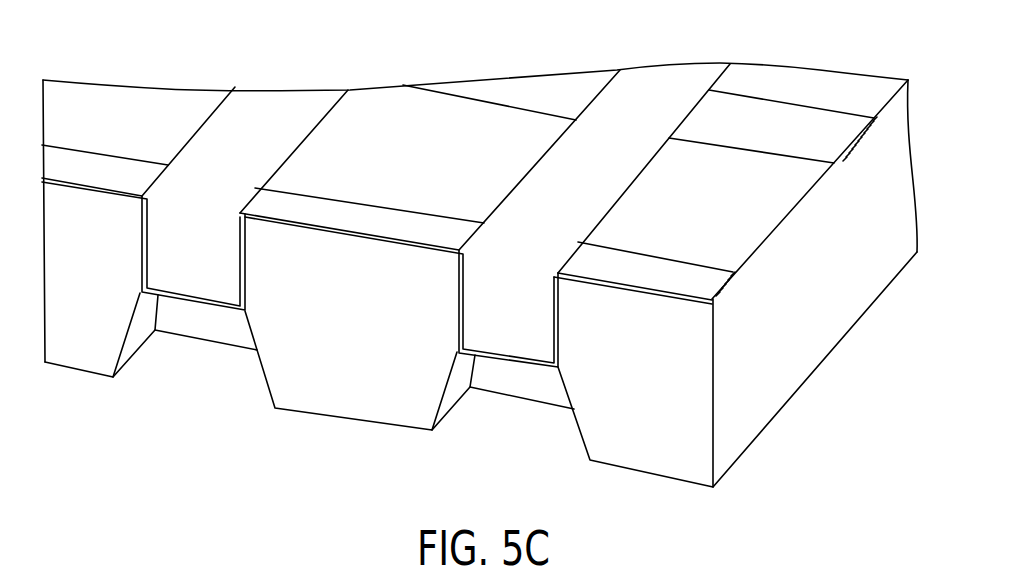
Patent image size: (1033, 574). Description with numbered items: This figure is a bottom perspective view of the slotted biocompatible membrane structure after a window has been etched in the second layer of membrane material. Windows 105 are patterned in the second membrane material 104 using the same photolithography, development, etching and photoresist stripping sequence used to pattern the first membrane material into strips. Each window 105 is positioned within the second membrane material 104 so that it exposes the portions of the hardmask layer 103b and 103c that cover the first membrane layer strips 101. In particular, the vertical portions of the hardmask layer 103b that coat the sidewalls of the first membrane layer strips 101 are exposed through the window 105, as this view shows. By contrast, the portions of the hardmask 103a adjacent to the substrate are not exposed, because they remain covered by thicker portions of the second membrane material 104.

The first membrane layer strips 101 is at (262, 115).
The hardmask layer portion adjacent to the substrate 103a is at (137, 160).
The vertical portions of the hardmask layer 103b is at (244, 263).
The hardmask layer portion covering the first membrane layer strips 103c is at (194, 311).
The second membrane material 104 is at (680, 417).
The window 105 is at (549, 427).